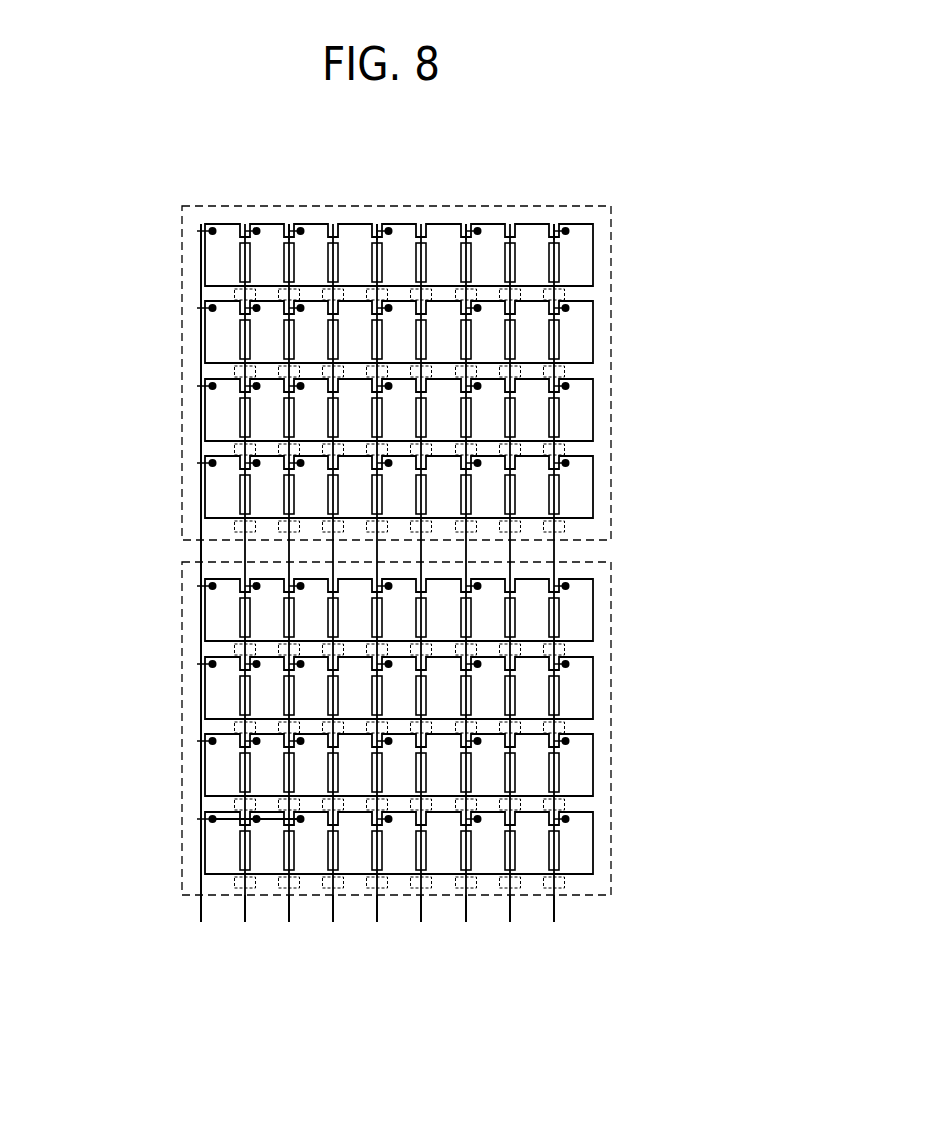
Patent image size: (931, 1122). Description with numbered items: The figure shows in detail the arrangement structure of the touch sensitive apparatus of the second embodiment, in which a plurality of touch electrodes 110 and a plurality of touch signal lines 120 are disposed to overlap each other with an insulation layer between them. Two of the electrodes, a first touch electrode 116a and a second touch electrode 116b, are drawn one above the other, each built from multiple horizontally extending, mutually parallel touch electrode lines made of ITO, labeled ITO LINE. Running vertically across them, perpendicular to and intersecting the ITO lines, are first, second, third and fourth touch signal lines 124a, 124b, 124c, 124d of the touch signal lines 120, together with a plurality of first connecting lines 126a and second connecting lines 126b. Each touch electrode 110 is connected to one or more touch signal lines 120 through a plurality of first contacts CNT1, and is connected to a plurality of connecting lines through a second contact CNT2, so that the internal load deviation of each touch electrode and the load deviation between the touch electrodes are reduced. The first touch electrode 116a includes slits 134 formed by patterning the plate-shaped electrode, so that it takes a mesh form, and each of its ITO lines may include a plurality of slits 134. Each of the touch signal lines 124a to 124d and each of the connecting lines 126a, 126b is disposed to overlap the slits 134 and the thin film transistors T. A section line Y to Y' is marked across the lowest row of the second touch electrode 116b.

The touch electrode 110 is at (312, 550).
The first touch electrode 116a is at (182, 399).
The second touch electrode 116b is at (346, 728).
The touch signal line 120 is at (165, 987).
The first touch signal line 124a is at (245, 922).
The second touch signal line 124b is at (333, 922).
The third touch signal line 124c is at (421, 922).
The fourth touch signal line 124d is at (510, 922).
The first connecting line 126a is at (557, 226).
The second connecting line 126b is at (615, 957).
The slit 134 is at (558, 255).
The thin film transistor T is at (254, 293).
The first contact CNT1 is at (256, 226).
The second contact CNT2 is at (211, 236).
The ITO line ITO LINE is at (201, 338).
The section line Y is at (256, 845).
The section line Y' is at (356, 846).